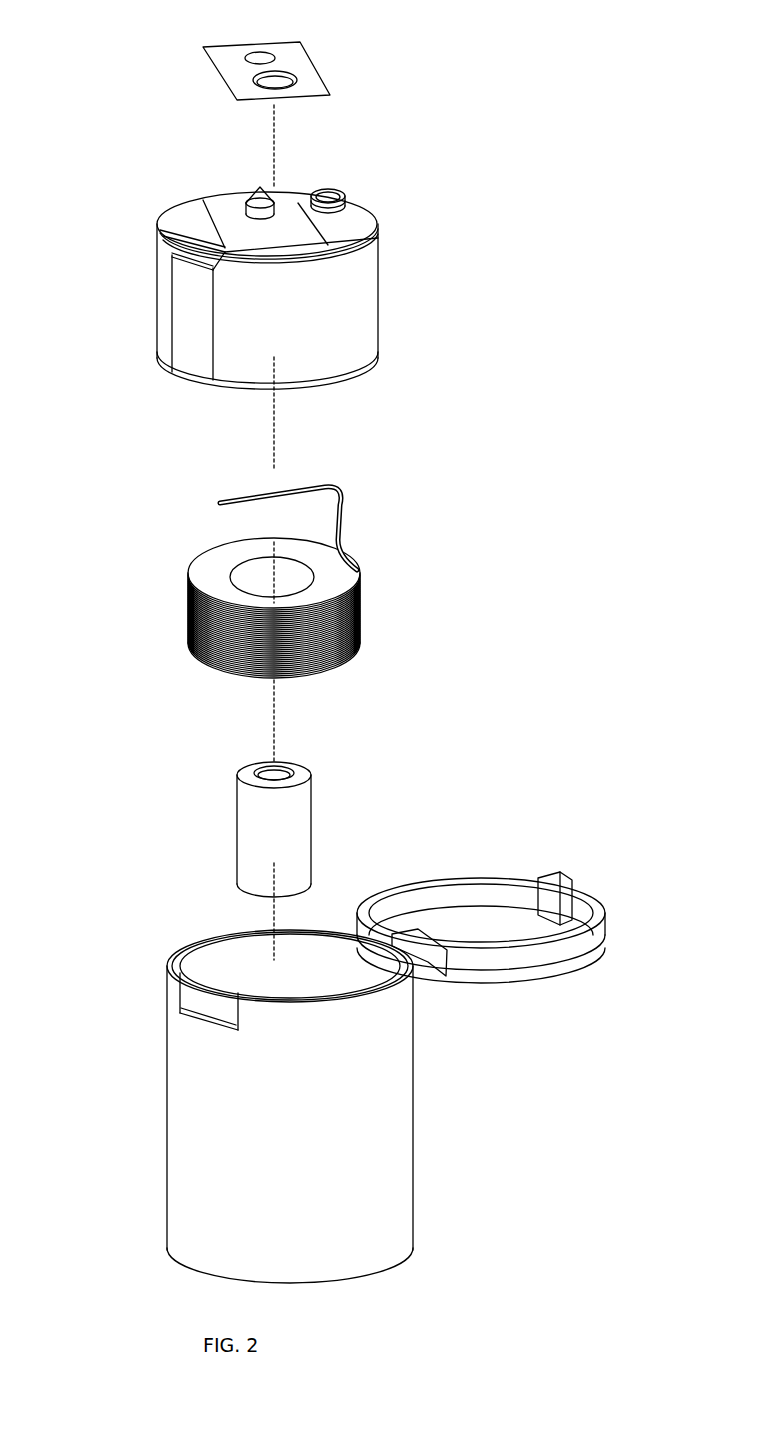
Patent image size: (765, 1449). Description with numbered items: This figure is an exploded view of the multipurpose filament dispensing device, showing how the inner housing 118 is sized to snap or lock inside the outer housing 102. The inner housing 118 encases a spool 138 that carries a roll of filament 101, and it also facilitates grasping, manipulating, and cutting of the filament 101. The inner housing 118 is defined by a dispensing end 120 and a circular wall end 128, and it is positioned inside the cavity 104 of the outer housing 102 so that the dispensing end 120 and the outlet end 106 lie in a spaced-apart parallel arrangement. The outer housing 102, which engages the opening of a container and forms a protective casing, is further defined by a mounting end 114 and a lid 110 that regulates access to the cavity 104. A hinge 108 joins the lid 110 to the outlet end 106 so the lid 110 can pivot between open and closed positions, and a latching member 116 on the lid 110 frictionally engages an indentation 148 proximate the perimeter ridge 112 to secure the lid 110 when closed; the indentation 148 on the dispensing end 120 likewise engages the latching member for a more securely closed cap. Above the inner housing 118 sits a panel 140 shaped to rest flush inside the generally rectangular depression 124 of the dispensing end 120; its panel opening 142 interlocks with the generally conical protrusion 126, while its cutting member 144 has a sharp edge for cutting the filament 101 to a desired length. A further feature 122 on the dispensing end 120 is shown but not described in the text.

The filament 101 is at (440, 592).
The outer housing 102 is at (480, 1142).
The cavity 104 is at (303, 985).
The outlet end 106 is at (173, 952).
The hinge 108 is at (420, 953).
The lid 110 is at (592, 942).
The perimeter ridge 112 is at (188, 997).
The mounting end 114 is at (375, 1273).
The latching member 116 is at (548, 892).
The inner housing 118 is at (463, 293).
The dispensing end 120 is at (375, 230).
The port 122 is at (347, 197).
The depression 124 is at (287, 218).
The protrusion 126 is at (250, 198).
The circular wall end 128 is at (372, 367).
The spool 138 is at (347, 821).
The panel 140 is at (317, 72).
The panel opening 142 is at (255, 53).
The cutting member 144 is at (263, 78).
The indentation 148 is at (185, 245).